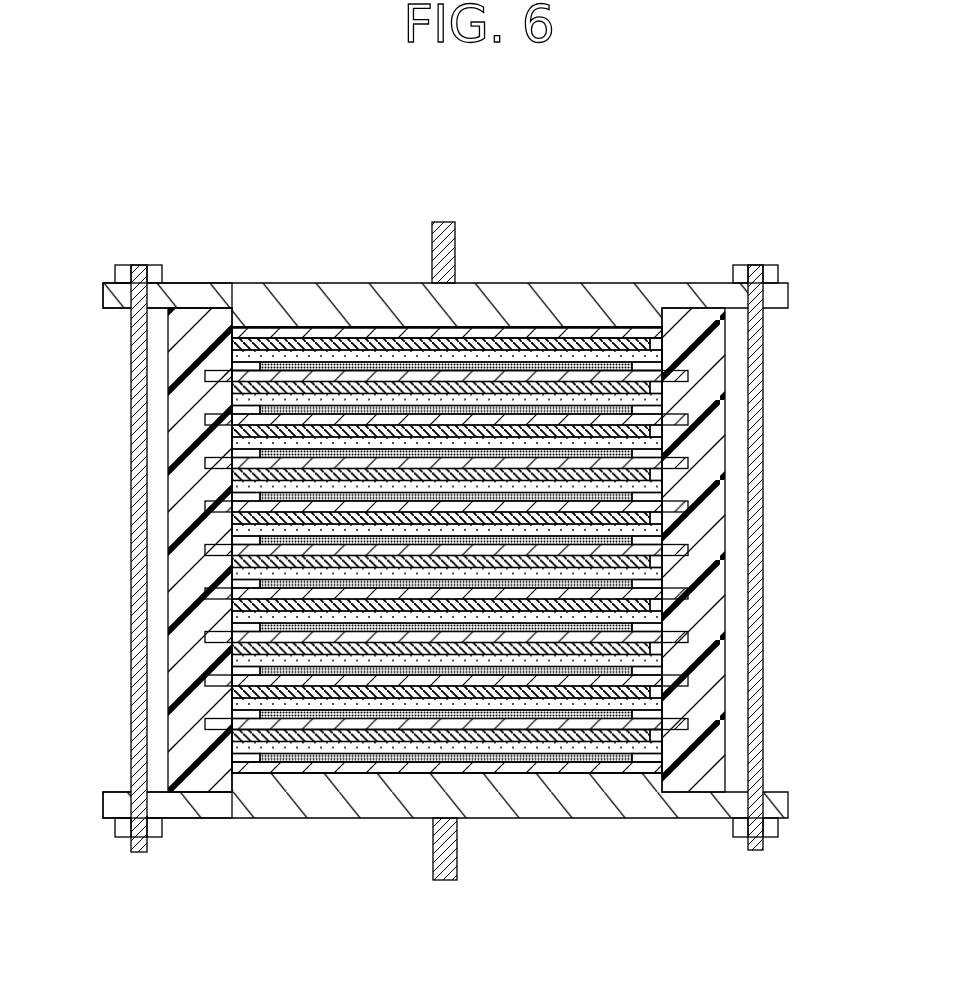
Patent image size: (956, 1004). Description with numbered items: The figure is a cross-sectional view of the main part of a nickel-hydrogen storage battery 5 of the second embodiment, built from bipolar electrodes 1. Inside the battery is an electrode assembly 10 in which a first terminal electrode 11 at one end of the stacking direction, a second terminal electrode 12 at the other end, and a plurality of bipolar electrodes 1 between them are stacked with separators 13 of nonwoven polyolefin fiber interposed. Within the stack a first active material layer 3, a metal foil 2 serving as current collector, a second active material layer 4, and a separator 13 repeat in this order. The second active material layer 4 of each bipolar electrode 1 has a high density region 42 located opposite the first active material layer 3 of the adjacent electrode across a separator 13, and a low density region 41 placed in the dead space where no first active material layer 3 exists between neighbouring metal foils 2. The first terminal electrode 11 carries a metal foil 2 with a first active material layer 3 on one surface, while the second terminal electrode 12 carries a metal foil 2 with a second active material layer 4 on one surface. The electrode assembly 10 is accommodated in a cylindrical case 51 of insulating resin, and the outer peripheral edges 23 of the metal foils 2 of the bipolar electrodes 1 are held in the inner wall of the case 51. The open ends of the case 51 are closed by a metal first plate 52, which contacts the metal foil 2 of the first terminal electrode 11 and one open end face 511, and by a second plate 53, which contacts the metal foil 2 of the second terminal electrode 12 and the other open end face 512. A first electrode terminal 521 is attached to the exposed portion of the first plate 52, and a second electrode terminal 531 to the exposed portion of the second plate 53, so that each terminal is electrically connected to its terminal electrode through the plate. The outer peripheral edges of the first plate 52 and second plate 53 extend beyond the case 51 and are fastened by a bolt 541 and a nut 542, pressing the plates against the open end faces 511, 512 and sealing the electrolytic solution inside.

The nickel-hydrogen storage battery 5 is at (448, 529).
The electrode assembly 10 is at (448, 530).
The bipolar electrode 1 is at (510, 880).
The first terminal electrode 11 is at (343, 886).
The second terminal electrode 12 is at (260, 177).
The separator 13 is at (366, 345).
The metal foil 2 is at (260, 340).
The first active material layer 3 is at (577, 352).
The second active material layer 4 is at (537, 556).
The low density region 41 is at (690, 557).
The high density region 42 is at (630, 540).
The outer peripheral edge 23 is at (205, 462).
The case 51 is at (708, 388).
The open end face 511 is at (210, 818).
The open end face 512 is at (197, 295).
The first plate 52 is at (445, 864).
The first electrode terminal 521 is at (440, 880).
The second plate 53 is at (445, 255).
The second electrode terminal 531 is at (442, 222).
The bolt 541 is at (138, 268).
The nut 542 is at (125, 836).